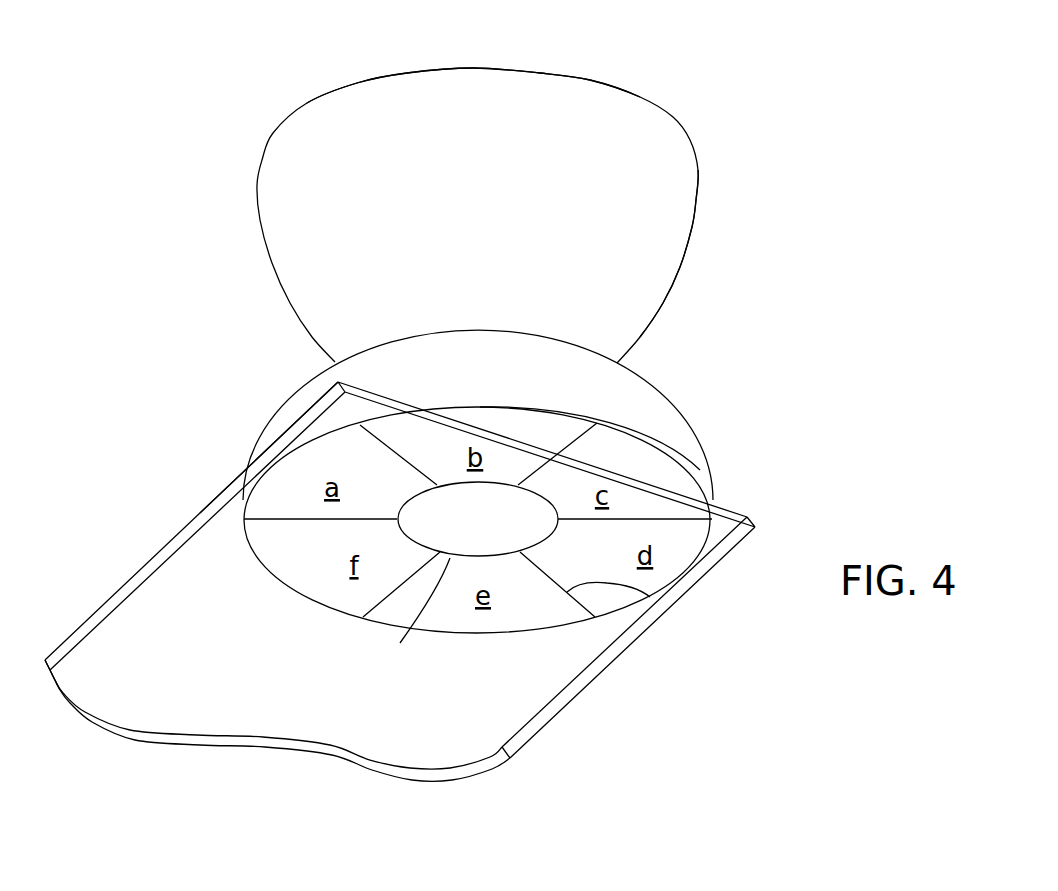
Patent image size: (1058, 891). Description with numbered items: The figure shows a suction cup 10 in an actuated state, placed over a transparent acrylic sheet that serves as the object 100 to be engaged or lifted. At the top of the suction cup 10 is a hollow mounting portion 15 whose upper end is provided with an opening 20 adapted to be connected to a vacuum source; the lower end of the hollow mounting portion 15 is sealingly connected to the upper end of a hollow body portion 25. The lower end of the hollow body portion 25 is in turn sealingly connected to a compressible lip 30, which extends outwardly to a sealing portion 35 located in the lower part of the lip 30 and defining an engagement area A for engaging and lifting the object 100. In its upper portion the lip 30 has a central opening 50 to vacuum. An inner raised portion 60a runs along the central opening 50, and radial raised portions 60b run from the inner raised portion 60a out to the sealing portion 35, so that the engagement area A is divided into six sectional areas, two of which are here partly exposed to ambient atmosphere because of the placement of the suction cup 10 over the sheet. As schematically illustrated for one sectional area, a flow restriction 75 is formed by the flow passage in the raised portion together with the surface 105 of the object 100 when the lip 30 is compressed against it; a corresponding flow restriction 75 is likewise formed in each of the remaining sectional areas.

The suction cup 10 is at (812, 145).
The hollow mounting portion 15 is at (673, 113).
The opening for vacuum 20 is at (378, 80).
The hollow body portion 25 is at (693, 265).
The compressible lip 30 is at (725, 482).
The sealing portion 35 is at (653, 443).
The central opening for vacuum 50 is at (478, 519).
The inner raised portion 60a is at (405, 616).
The radial raised portion 60b is at (641, 592).
The flow restriction 75 is at (410, 500).
The object to be engaged or lifted 100 is at (143, 545).
The surface of an object 105 is at (230, 483).
The engagement area A is at (287, 497).